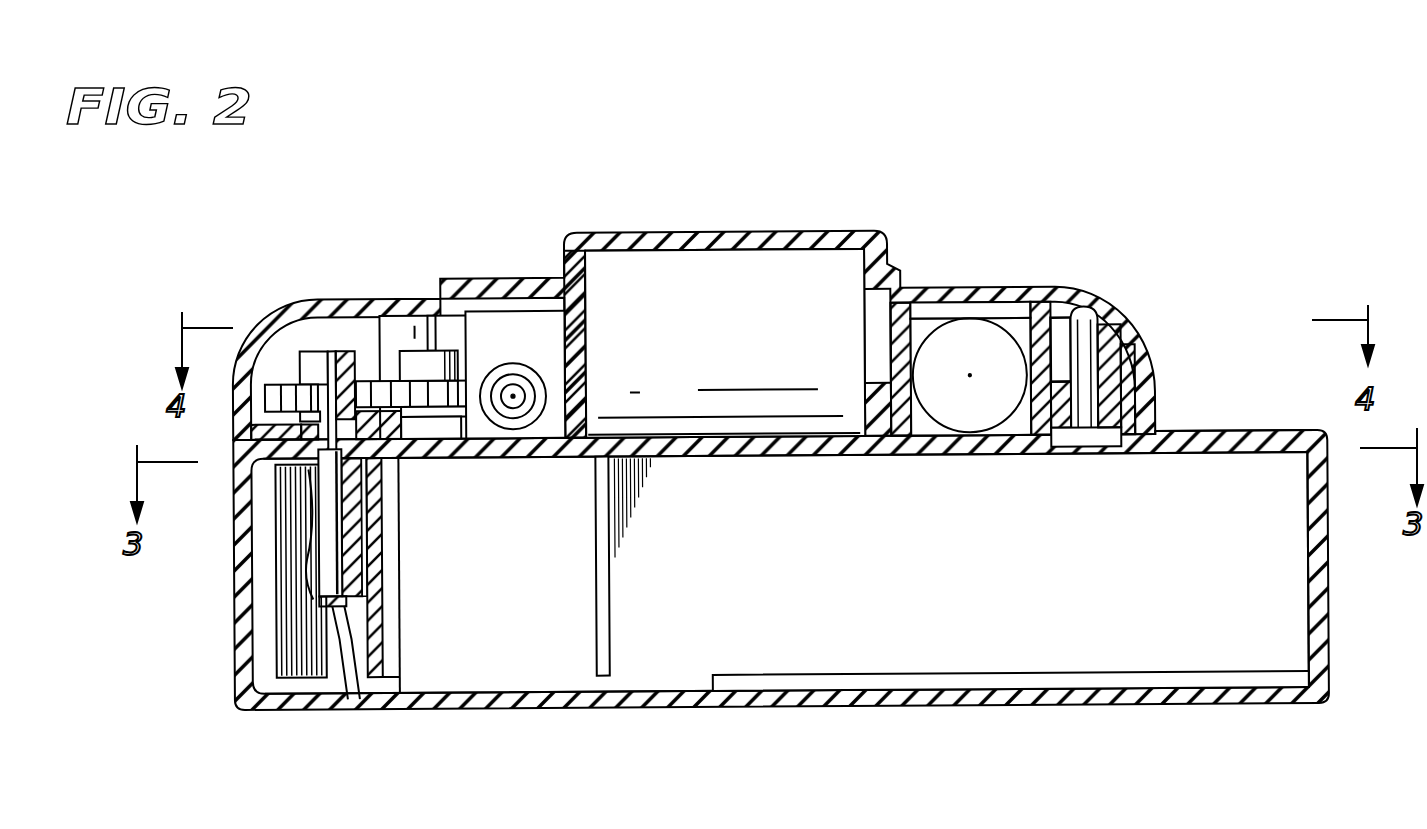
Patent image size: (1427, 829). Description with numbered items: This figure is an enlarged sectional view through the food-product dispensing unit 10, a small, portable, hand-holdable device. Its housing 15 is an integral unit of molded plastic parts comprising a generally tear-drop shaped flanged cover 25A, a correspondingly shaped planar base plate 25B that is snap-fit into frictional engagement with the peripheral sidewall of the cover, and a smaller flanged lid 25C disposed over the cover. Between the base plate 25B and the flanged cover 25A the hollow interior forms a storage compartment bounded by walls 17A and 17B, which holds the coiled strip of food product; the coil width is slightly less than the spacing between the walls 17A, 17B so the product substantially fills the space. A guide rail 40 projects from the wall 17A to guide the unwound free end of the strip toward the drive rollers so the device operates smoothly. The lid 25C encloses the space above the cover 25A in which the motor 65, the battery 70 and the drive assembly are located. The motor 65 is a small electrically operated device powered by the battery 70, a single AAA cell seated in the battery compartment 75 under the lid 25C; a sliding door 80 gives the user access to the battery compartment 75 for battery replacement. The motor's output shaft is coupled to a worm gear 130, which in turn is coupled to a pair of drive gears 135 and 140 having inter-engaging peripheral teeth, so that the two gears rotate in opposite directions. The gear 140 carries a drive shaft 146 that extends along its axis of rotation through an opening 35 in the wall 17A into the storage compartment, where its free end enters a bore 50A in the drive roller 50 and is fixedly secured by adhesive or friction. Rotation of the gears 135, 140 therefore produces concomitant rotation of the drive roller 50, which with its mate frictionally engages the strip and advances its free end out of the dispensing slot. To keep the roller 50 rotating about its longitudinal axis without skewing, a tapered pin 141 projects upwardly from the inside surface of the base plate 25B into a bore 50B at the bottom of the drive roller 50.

The dispensing unit 10 is at (713, 200).
The housing 15 is at (1206, 433).
The storage compartment wall 17A is at (763, 452).
The storage compartment wall 17B is at (820, 680).
The flanged cover 25A is at (1308, 562).
The base plate 25B is at (670, 706).
The lid 25C is at (830, 235).
The openings 35 is at (343, 448).
The guide rail 40 is at (605, 577).
The drive roller 50 is at (293, 680).
The bore 50A is at (345, 540).
The bore 50B is at (347, 610).
The motor 65 is at (745, 343).
The battery 70 is at (965, 330).
The battery compartment 75 is at (1023, 327).
The sliding door 80 is at (1013, 313).
The worm gear 130 is at (522, 418).
The drive gear 135 is at (440, 462).
The drive gear 140 is at (276, 385).
The tapered pin 141 is at (347, 680).
The drive shaft 146 is at (330, 575).